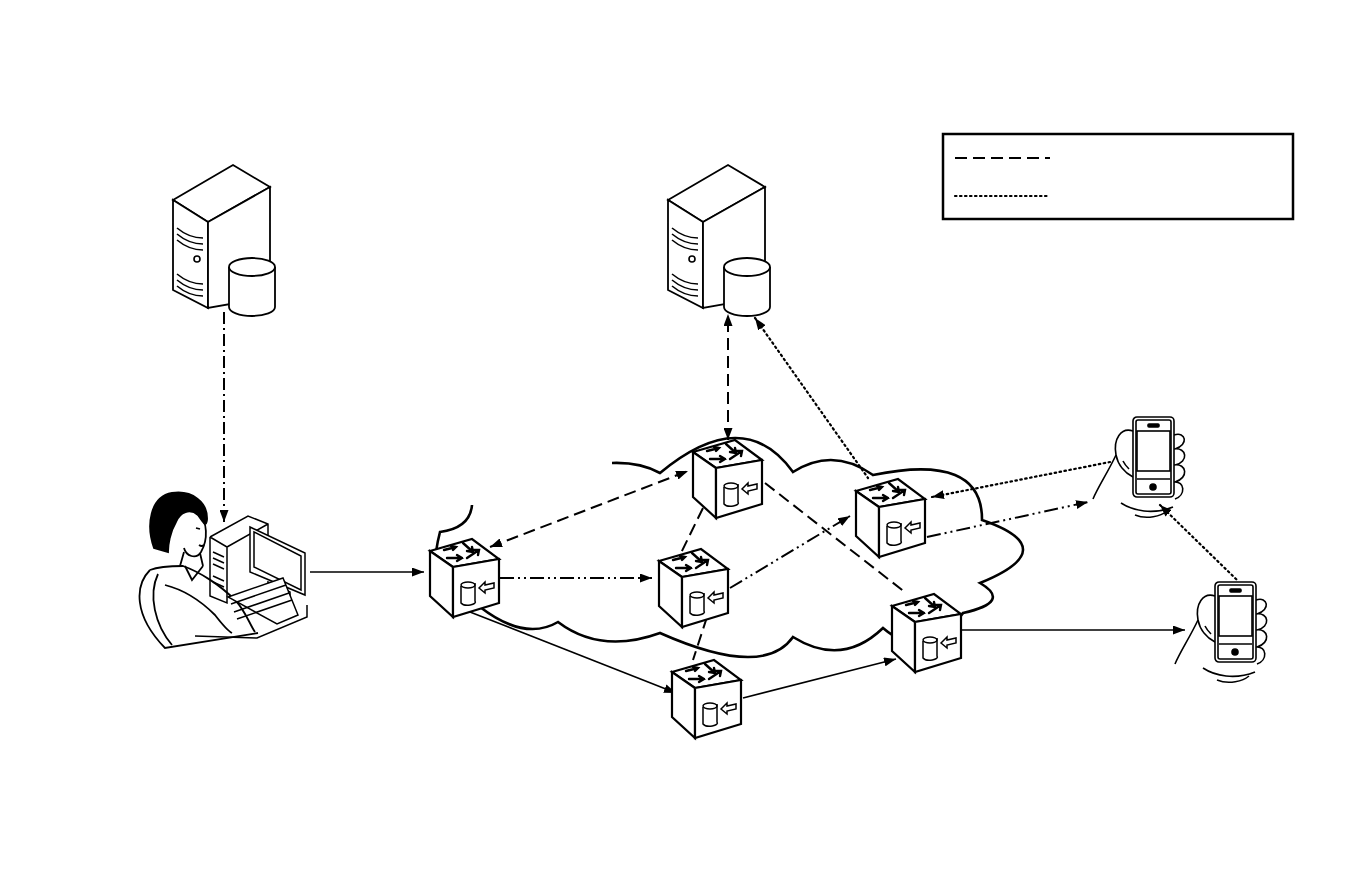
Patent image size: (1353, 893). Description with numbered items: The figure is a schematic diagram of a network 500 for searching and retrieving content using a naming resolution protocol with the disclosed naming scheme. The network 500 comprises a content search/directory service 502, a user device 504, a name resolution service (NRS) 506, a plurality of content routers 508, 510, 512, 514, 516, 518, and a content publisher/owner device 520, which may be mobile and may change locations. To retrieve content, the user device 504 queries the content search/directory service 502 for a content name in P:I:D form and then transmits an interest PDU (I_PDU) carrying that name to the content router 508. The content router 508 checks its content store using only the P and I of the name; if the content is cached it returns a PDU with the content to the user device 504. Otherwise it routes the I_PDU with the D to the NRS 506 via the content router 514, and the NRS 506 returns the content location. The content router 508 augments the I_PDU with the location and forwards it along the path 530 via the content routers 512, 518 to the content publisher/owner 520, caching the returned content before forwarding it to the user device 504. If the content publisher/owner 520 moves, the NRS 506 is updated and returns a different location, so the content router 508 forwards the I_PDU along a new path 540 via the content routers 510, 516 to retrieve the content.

The network 500 is at (157, 85).
The content search/directory service 502 is at (270, 222).
The user device 504 is at (150, 560).
The name resolution service (NRS) 506 is at (767, 222).
The content router 508 is at (440, 618).
The content router 510 is at (661, 564).
The content router 512 is at (742, 711).
The content router 514 is at (708, 450).
The content router 516 is at (898, 480).
The content router 518 is at (938, 663).
The content publisher/owner device 520 is at (1163, 417).
The path 530 is at (1080, 631).
The new path 540 is at (1055, 516).